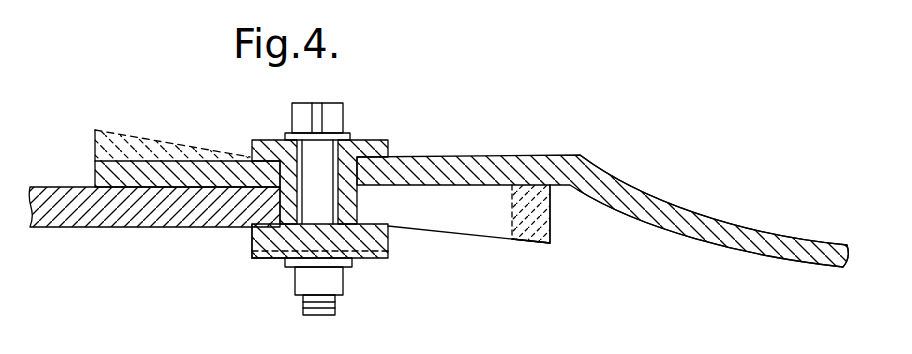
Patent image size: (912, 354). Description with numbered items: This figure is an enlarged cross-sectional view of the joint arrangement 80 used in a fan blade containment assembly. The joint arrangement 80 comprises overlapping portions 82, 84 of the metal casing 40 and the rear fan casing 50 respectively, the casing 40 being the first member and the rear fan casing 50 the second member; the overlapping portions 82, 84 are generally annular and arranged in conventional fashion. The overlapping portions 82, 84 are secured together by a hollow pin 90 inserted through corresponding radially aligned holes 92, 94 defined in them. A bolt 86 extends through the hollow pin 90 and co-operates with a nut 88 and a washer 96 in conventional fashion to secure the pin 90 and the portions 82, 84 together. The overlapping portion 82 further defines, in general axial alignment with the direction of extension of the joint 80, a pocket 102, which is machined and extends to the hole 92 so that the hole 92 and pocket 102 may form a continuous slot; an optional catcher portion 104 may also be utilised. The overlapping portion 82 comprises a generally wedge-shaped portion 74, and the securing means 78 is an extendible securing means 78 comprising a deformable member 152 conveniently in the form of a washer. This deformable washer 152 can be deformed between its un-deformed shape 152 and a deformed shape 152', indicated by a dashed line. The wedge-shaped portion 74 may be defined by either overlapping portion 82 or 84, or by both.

The casing 40 is at (32, 232).
The overlapping portion 82 is at (163, 228).
The wedge-shaped portion 74 is at (95, 130).
The hole 94 is at (250, 152).
The hollow pin 90 is at (285, 165).
The extendible securing means 78 is at (282, 108).
The bolt 86 is at (343, 104).
The joint arrangement 80 is at (602, 171).
The overlapping portion 84 is at (450, 156).
The rear fan casing 50 is at (580, 155).
The pocket 102 is at (482, 218).
The catcher portion 104 is at (547, 227).
The hole 92 is at (290, 213).
The deformable member 152 is at (226, 264).
The deformed shape 152' is at (261, 296).
The washer 96 is at (352, 262).
The nut 88 is at (345, 290).